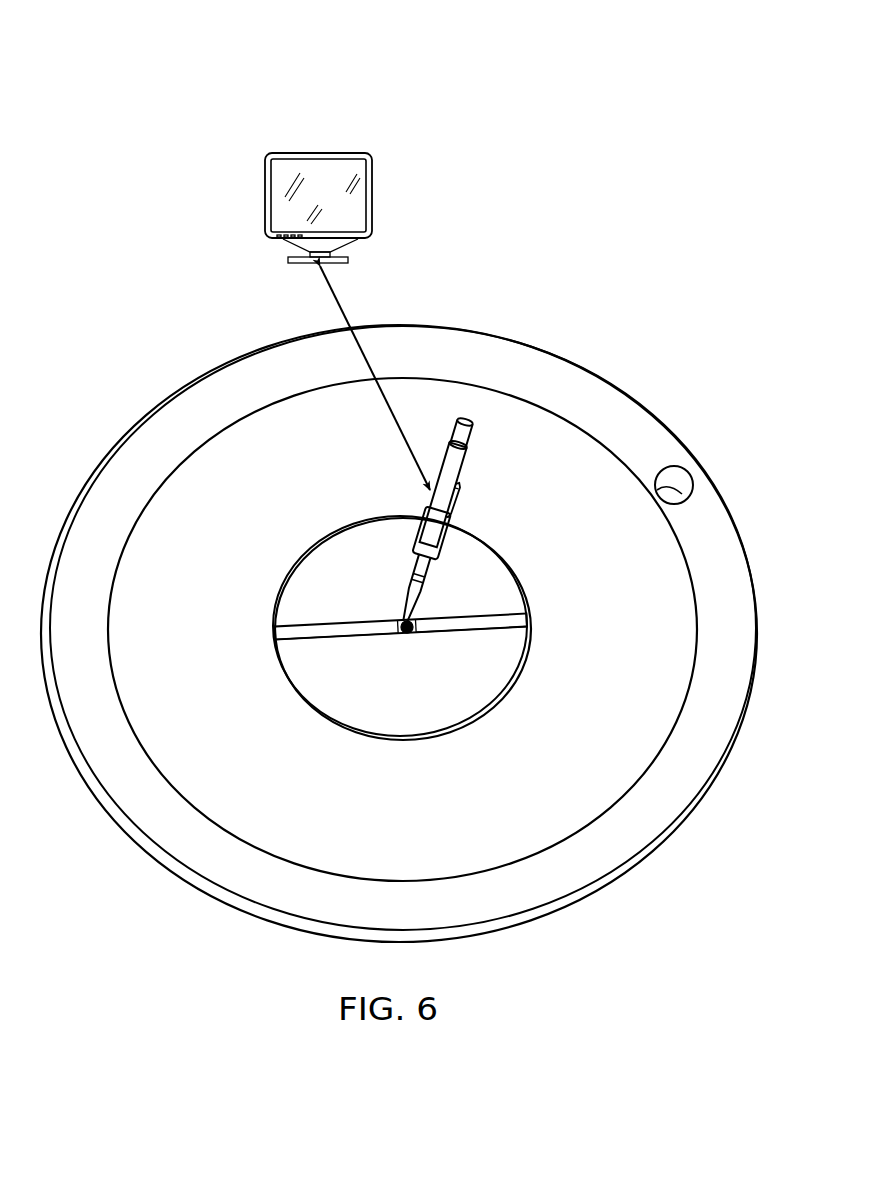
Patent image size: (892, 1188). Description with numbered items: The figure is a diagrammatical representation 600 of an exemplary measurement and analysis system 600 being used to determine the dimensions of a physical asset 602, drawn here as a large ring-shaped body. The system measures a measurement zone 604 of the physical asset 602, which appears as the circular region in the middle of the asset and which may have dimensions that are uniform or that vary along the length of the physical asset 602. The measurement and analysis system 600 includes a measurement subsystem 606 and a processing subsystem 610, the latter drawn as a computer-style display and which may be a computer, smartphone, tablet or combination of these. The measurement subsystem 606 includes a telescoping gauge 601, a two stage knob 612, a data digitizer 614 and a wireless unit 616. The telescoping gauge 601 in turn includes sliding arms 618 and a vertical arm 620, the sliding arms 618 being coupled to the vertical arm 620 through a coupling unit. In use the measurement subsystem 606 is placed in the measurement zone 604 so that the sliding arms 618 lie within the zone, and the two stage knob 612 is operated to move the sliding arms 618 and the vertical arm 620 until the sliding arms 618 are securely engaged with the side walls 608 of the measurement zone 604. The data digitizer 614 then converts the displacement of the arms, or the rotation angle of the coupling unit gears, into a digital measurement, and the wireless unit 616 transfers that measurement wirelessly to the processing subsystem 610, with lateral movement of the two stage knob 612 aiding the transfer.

The measurement and analysis system 600 is at (668, 71).
The telescoping gauge 601 is at (335, 645).
The physical asset 602 is at (666, 419).
The measurement zone 604 is at (382, 715).
The measurement subsystem 606 is at (480, 610).
The side walls 608 is at (488, 705).
The processing subsystem 610 is at (372, 193).
The two stage knob 612 is at (418, 530).
The data digitizer 614 is at (410, 636).
The wireless unit 616 is at (466, 494).
The sliding arms 618 is at (483, 630).
The vertical arm 620 is at (447, 524).